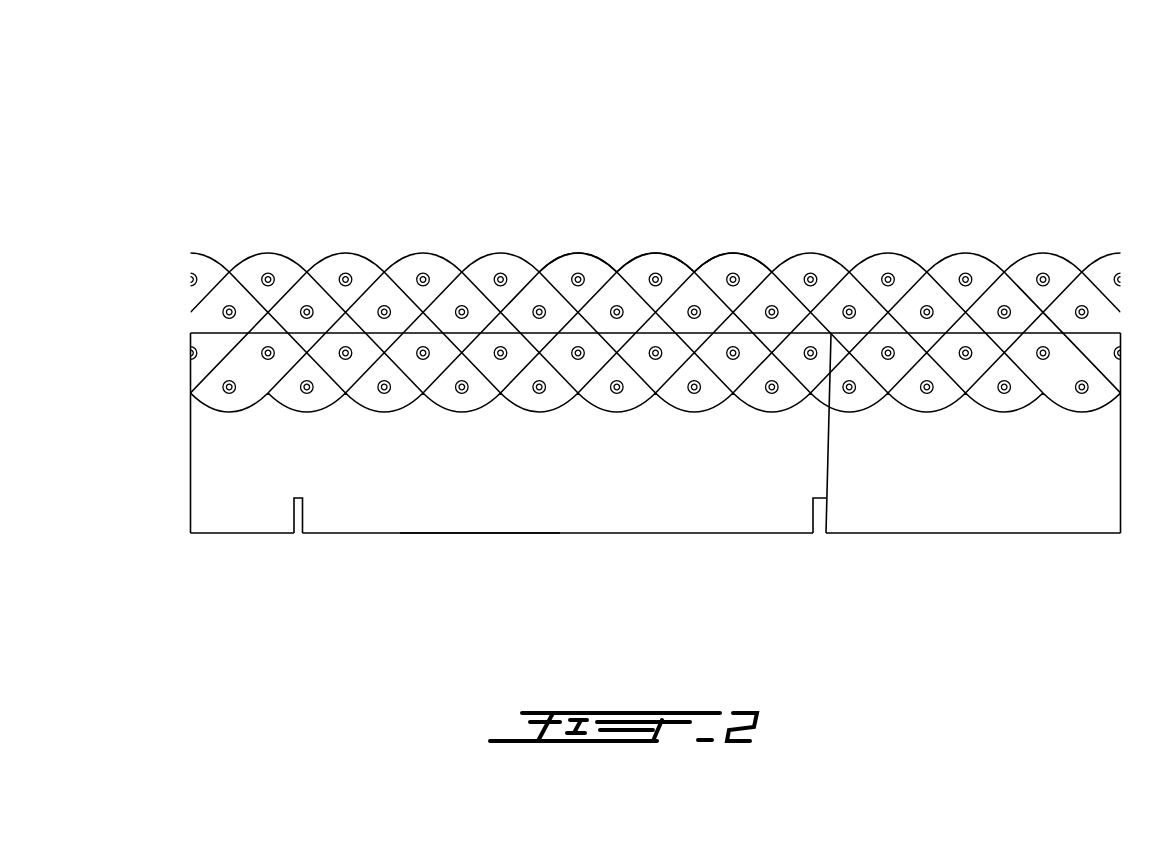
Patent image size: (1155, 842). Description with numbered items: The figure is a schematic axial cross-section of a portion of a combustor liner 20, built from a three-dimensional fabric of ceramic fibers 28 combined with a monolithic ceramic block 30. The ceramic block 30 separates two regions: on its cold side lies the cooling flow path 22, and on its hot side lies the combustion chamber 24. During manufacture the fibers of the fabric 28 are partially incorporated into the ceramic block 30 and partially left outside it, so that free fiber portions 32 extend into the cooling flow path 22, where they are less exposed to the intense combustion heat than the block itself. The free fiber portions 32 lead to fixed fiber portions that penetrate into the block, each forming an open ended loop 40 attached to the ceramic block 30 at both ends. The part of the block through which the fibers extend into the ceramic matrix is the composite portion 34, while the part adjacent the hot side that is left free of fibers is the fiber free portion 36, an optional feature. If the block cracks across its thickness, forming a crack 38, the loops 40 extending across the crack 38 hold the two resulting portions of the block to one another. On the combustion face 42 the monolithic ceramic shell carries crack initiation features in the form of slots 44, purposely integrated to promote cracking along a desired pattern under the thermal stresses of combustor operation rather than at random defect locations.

The composite structure 20 is at (206, 177).
The cooling flow path 22 is at (678, 217).
The combustion chamber 24 is at (612, 597).
The 3D fabric of ceramic fibers 28 is at (401, 240).
The monolithic ceramic block 30 is at (472, 542).
The free fiber portions 32 is at (177, 253).
The composite portion 34 is at (177, 334).
The fiber free portion 36 is at (177, 415).
The crack 38 is at (844, 455).
The open ended loop 40 is at (868, 267).
The combustion face 42 is at (922, 533).
The slots 44 is at (803, 508).